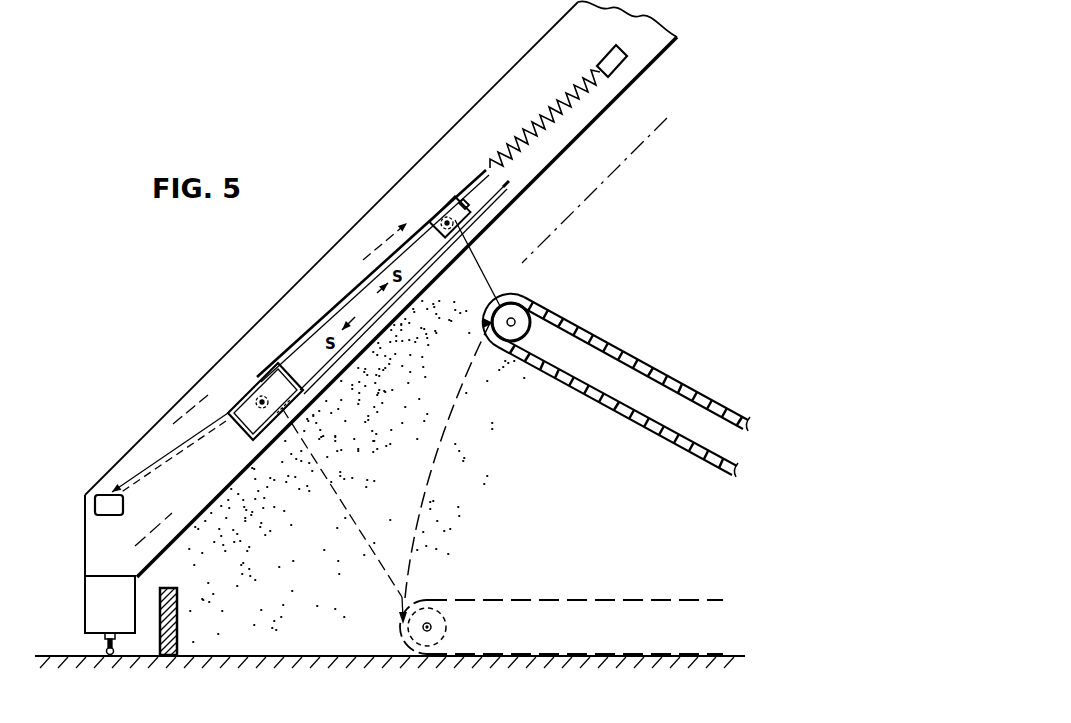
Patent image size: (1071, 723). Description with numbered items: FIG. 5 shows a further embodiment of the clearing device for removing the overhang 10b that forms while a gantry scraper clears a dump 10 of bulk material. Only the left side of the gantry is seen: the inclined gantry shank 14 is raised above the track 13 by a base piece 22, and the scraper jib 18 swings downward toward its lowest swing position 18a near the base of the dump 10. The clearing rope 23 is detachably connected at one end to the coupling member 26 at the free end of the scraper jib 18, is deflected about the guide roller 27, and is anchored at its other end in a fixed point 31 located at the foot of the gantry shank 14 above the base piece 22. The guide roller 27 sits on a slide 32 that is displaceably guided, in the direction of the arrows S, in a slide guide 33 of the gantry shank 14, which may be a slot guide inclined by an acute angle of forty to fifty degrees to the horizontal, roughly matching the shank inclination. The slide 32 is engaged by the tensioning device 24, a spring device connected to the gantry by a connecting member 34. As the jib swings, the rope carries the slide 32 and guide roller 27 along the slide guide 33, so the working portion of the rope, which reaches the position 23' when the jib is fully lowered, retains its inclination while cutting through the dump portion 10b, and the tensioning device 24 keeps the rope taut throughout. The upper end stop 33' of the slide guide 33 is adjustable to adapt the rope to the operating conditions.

The dump 10 is at (502, 487).
The overhang 10b is at (400, 451).
The track 13 is at (103, 649).
The gantry shank 14 is at (380, 222).
The scraper jib 18 is at (650, 387).
The lowest swing position 18a is at (537, 616).
The base piece 22 is at (98, 594).
The clearing rope 23 is at (515, 263).
The position of the clearing rope 23' is at (344, 516).
The tensioning device 24 is at (548, 117).
The coupling member 26 is at (520, 302).
The guide roller 27 is at (443, 213).
The fixed point 31 is at (112, 494).
The slide 32 is at (440, 199).
The slide guide 33 is at (358, 305).
The upper end stop 33' is at (405, 257).
The connecting member 34 is at (608, 50).